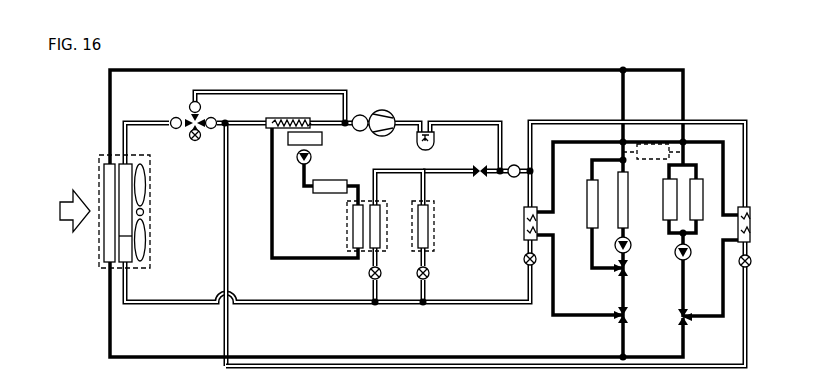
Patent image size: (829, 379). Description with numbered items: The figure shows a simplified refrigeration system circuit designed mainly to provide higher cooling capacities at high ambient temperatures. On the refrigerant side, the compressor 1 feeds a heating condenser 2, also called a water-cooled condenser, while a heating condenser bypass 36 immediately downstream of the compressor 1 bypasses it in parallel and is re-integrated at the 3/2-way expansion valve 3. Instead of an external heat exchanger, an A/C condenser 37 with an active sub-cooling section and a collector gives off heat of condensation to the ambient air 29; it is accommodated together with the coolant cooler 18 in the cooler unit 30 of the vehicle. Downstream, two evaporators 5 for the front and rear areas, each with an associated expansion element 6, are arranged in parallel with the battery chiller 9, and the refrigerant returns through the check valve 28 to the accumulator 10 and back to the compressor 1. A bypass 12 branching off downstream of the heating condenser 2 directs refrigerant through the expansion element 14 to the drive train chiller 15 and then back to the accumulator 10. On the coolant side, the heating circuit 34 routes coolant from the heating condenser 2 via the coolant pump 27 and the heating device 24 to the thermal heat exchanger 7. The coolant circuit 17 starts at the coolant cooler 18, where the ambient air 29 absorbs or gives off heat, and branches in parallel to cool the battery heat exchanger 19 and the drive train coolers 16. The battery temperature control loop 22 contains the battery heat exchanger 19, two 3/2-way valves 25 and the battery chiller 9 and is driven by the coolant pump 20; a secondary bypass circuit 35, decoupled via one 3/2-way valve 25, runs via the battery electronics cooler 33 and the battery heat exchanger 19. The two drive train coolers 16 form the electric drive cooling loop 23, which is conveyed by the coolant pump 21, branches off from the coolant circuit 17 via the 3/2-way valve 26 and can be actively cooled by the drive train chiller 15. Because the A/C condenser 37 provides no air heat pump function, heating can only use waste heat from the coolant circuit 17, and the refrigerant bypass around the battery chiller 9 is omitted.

The compressor 1 is at (380, 110).
The heating condenser 2 is at (303, 116).
The 3/2-way expansion valve 3 is at (188, 117).
The evaporator 5 is at (372, 250).
The expansion element 6 is at (382, 276).
The thermal heat exchanger 7 is at (352, 222).
The battery chiller 9 is at (524, 215).
The accumulator 10 is at (431, 148).
The bypass 12 is at (226, 212).
The expansion element 14 is at (748, 267).
The drive train chiller 15 is at (751, 210).
The drive train cooler 16 is at (663, 195).
The coolant circuit 17 is at (188, 355).
The coolant cooler 18 is at (107, 247).
The battery heat exchanger 19 is at (629, 208).
The coolant pump 20 is at (631, 246).
The coolant pump 21 is at (690, 250).
The battery temperature control loop 22 is at (554, 152).
The electric drive cooling loop 23 is at (722, 288).
The heating device 24 is at (328, 180).
The 3/2-way valve 25 is at (629, 276).
The 3/2-way valve 26 is at (689, 324).
The coolant pump 27 is at (300, 163).
The check valve 28 is at (481, 165).
The ambient air 29 is at (70, 198).
The cooler unit 30 is at (99, 173).
The battery electronics cooler 33 is at (587, 208).
The heating circuit 34 is at (274, 202).
The secondary bypass circuit 35 is at (590, 245).
The heating condenser bypass 36 is at (252, 92).
The A/C condenser 37 is at (126, 195).